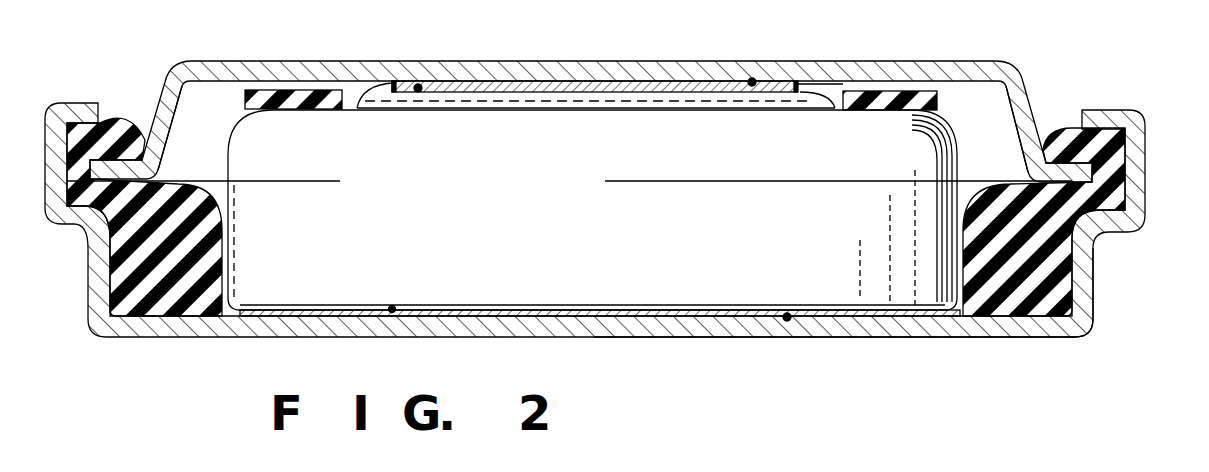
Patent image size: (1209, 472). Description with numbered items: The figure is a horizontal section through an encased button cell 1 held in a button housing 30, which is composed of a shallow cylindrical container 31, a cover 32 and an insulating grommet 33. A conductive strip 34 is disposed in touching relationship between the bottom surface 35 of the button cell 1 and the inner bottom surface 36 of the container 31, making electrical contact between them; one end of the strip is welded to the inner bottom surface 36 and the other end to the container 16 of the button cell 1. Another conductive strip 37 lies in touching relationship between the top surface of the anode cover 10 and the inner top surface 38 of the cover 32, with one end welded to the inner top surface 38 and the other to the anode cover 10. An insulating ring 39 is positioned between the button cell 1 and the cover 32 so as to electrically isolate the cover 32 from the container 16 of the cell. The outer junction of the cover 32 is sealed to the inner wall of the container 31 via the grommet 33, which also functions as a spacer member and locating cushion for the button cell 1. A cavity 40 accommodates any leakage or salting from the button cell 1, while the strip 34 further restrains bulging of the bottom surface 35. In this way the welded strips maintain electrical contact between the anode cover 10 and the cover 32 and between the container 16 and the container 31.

The button cell 1 is at (920, 143).
The anode cover 10 is at (437, 100).
The container 16 is at (903, 298).
The button housing 30 is at (1133, 233).
The shallow cylindrical container 31 is at (1082, 300).
The cover 32 is at (838, 67).
The insulating grommet 33 is at (1122, 152).
The conductive strip 34 is at (808, 317).
The bottom surface 35 is at (833, 314).
The inner bottom surface 36 is at (737, 317).
The conductive strip 37 is at (612, 88).
The inner top surface 38 is at (582, 80).
The insulating ring 39 is at (883, 100).
The cavity 40 is at (200, 97).